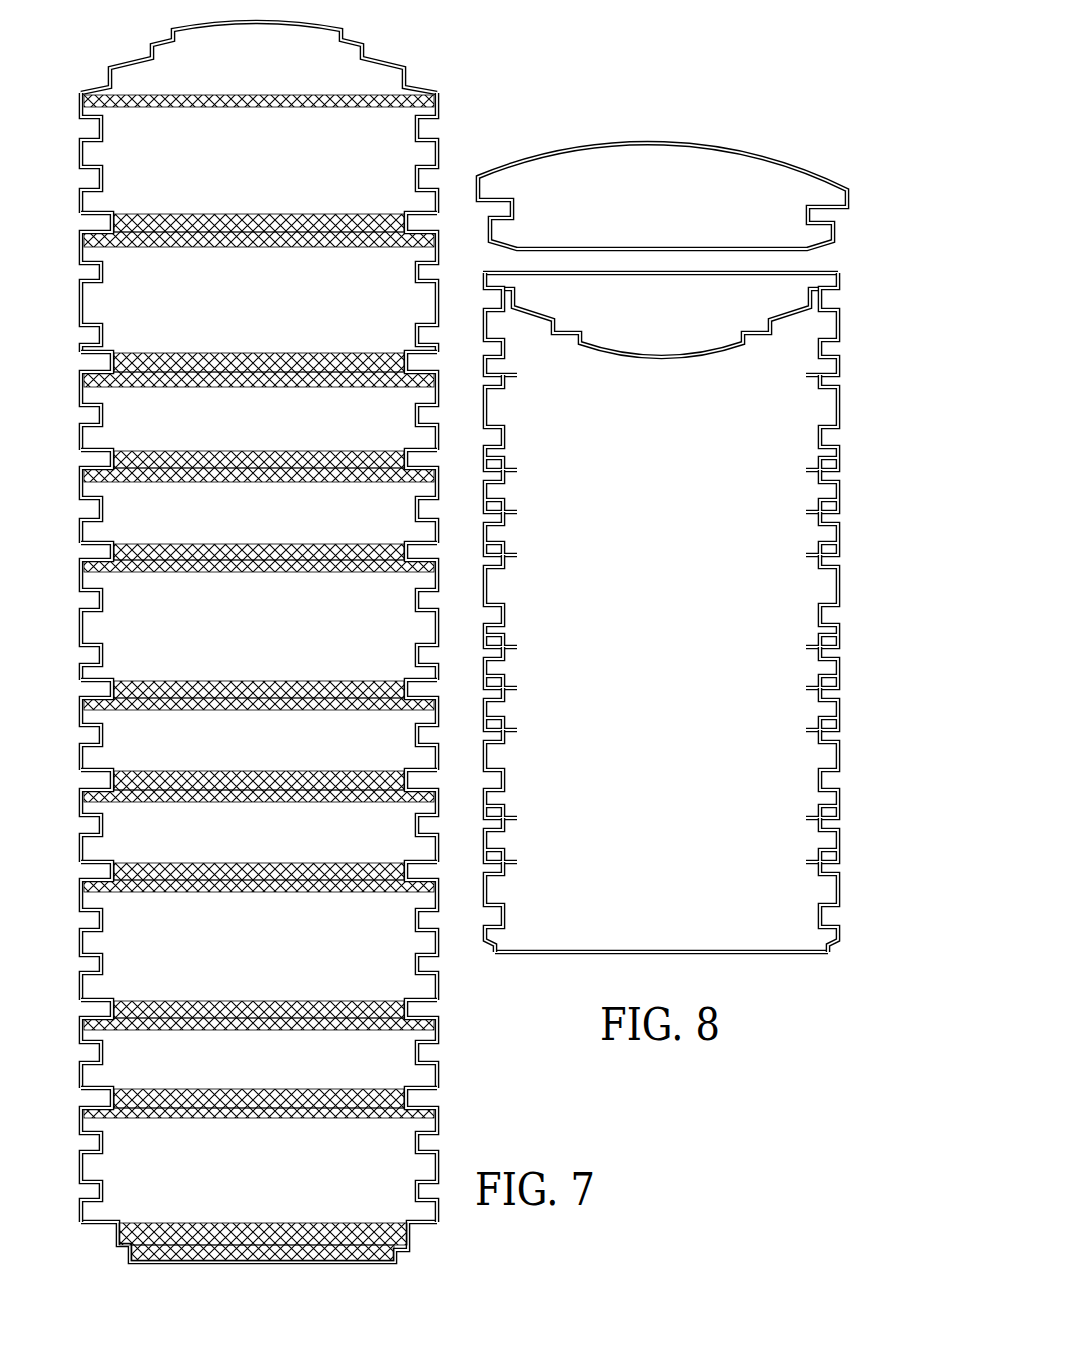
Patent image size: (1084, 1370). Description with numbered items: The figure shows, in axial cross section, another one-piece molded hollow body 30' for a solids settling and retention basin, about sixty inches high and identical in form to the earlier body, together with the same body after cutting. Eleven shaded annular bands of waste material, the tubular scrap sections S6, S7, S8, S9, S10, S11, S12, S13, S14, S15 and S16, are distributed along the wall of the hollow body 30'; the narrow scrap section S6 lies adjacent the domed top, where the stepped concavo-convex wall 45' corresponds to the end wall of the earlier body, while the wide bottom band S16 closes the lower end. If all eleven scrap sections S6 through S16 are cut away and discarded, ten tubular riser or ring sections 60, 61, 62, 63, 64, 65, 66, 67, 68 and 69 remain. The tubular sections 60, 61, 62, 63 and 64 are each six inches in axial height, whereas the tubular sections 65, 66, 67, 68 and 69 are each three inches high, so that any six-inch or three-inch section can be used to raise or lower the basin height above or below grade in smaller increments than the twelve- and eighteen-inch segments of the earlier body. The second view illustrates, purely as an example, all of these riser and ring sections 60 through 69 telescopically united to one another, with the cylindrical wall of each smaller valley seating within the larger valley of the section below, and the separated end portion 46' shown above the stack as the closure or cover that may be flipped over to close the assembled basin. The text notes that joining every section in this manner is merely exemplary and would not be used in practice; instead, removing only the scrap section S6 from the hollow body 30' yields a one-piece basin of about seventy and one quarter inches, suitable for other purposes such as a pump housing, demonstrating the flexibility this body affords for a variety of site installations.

In FIG. 7, the hollow body 30' is at (237, 638).
In FIG. 7, the domed end projection / mating recess 45' is at (259, 53).
In FIG. 8, the domed end projection / mating recess 45' is at (661, 321).
In FIG. 8, the lid 46' is at (662, 167).
In FIG. 7, the tubular riser or ring section 60 is at (239, 160).
In FIG. 8, the tubular riser or ring section 60 is at (640, 313).
In FIG. 7, the tubular riser or ring section 61 is at (239, 302).
In FIG. 8, the tubular riser or ring section 61 is at (640, 417).
In FIG. 7, the tubular riser or ring section 62 is at (239, 626).
In FIG. 8, the tubular riser or ring section 62 is at (640, 587).
In FIG. 7, the tubular riser or ring section 63 is at (239, 962).
In FIG. 8, the tubular riser or ring section 63 is at (640, 766).
In FIG. 7, the tubular riser or ring section 64 is at (239, 1184).
In FIG. 8, the tubular riser or ring section 64 is at (640, 905).
In FIG. 7, the tubular riser or ring section 65 is at (239, 429).
In FIG. 8, the tubular riser or ring section 65 is at (640, 462).
In FIG. 7, the tubular riser or ring section 66 is at (239, 533).
In FIG. 8, the tubular riser or ring section 66 is at (640, 510).
In FIG. 7, the tubular riser or ring section 67 is at (239, 758).
In FIG. 8, the tubular riser or ring section 67 is at (640, 652).
In FIG. 7, the tubular riser or ring section 68 is at (239, 853).
In FIG. 8, the tubular riser or ring section 68 is at (640, 696).
In FIG. 7, the tubular riser or ring section 69 is at (239, 1082).
In FIG. 8, the tubular riser or ring section 69 is at (640, 822).
In FIG. 7, the tubular scrap section S6 is at (259, 135).
In FIG. 7, the tubular scrap section S7 is at (259, 261).
In FIG. 7, the tubular scrap section S8 is at (259, 395).
In FIG. 7, the tubular scrap section S9 is at (259, 491).
In FIG. 7, the tubular scrap section S10 is at (259, 590).
In FIG. 7, the tubular scrap section S11 is at (259, 722).
In FIG. 7, the tubular scrap section S12 is at (259, 814).
In FIG. 7, the tubular scrap section S13 is at (259, 913).
In FIG. 7, the tubular scrap section S14 is at (259, 1040).
In FIG. 7, the tubular scrap section S15 is at (259, 1134).
In FIG. 7, the tubular scrap section S16 is at (263, 1209).